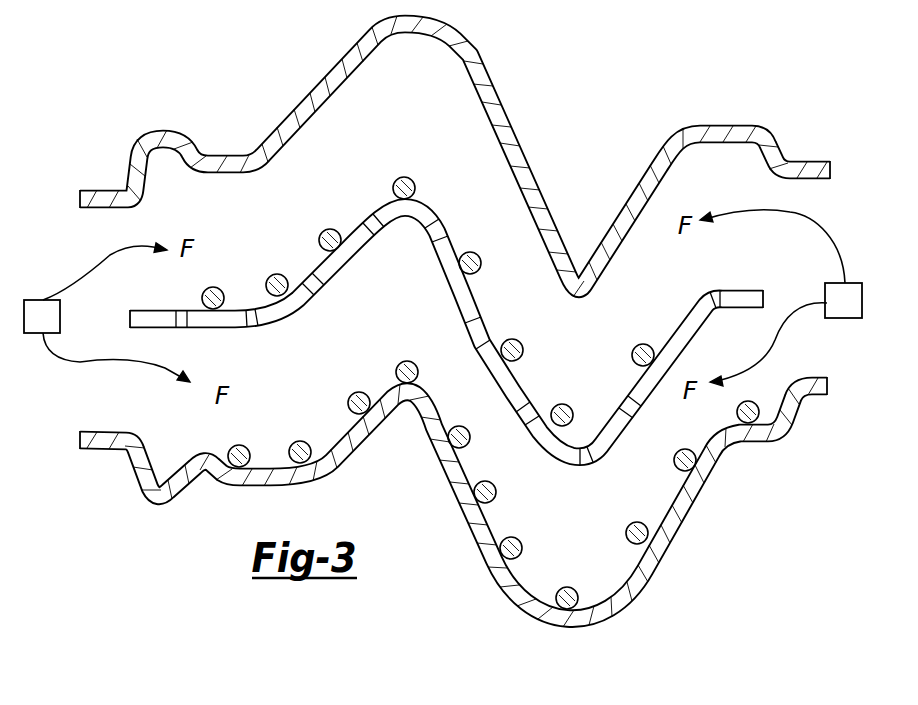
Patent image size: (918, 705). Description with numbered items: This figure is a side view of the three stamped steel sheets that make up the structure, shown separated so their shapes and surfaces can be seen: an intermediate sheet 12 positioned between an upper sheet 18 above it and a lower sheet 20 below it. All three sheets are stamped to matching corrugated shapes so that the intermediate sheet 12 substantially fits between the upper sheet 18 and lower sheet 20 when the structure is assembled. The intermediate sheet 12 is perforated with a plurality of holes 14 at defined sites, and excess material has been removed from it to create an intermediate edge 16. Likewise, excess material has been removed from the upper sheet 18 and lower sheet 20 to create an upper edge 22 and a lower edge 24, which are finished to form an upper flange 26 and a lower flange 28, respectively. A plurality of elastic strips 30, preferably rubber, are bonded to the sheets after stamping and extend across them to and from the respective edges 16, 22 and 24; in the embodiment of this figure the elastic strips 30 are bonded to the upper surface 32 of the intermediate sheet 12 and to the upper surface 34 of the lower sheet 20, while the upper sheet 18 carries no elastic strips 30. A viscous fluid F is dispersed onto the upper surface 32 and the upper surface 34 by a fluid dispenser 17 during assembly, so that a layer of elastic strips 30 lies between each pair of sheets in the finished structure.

The intermediate sheet 12 is at (450, 337).
The holes 14 is at (684, 326).
The intermediate edge 16 is at (765, 298).
The fluid dispenser 17 is at (443, 298).
The upper sheet 18 is at (454, 156).
The lower sheet 20 is at (450, 502).
The upper edge 22 is at (832, 168).
The lower edge 24 is at (826, 393).
The upper flange 26 is at (110, 213).
The lower flange 28 is at (110, 431).
The elastic strips 30 is at (275, 274).
The upper surface of the intermediate sheet 32 is at (152, 310).
The upper surface of the lower sheet 34 is at (204, 447).